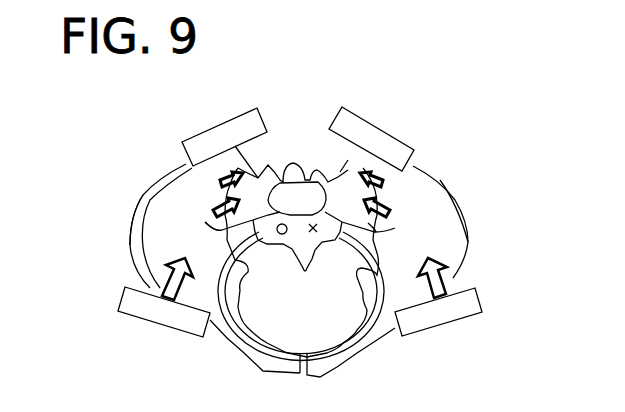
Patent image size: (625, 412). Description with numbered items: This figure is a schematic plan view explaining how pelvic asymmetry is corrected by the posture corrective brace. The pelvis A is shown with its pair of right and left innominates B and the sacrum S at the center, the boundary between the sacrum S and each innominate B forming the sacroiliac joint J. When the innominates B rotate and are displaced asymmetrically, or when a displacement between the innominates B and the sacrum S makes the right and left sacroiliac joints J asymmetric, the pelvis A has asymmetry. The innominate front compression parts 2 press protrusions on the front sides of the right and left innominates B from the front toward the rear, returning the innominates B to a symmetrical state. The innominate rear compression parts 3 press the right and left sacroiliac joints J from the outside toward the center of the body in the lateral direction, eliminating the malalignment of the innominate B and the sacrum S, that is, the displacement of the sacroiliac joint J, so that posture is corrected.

The pelvis A is at (450, 144).
The sacrum S is at (250, 214).
The innominate B is at (165, 232).
The sacroiliac joint J is at (368, 223).
The innominate front compression part 2 is at (148, 321).
The innominate rear compression part 3 is at (212, 129).